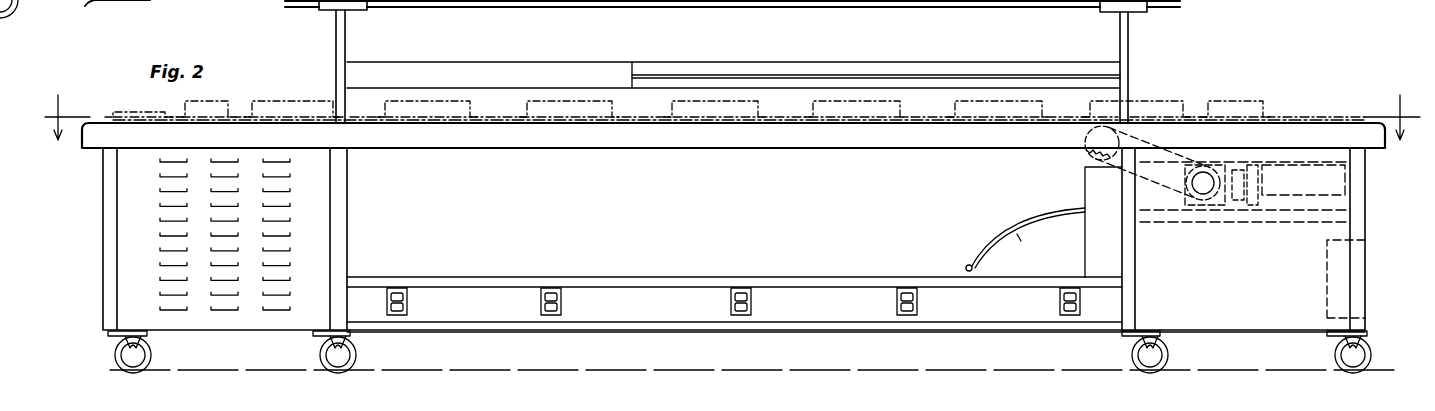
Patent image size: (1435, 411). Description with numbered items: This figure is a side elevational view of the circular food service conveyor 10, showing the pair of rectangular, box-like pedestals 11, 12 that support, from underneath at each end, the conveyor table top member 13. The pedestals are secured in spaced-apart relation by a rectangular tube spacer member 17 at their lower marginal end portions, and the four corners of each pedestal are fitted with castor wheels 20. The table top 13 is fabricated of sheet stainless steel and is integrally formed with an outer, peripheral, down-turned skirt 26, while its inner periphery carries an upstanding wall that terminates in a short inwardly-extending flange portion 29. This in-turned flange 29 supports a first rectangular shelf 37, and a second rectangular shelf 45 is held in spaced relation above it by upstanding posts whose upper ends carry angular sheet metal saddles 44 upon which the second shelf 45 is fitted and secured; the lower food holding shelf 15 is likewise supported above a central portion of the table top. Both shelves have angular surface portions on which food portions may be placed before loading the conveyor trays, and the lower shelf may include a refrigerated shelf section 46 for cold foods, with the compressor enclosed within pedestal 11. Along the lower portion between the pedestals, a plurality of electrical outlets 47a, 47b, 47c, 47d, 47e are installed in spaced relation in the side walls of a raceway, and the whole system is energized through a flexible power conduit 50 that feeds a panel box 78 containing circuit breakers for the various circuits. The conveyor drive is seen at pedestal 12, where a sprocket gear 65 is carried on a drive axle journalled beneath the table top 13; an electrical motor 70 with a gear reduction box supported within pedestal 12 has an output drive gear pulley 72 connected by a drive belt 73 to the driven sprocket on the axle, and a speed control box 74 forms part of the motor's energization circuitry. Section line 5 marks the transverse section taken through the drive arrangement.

The section line 5- 5 is at (732, 106).
The circular food service conveyor 10 is at (733, 94).
The box-like pedestal 11 is at (100, 192).
The box-like pedestal 12 is at (1377, 212).
The conveyor table top member 13 is at (1344, 120).
The lower food holding shelf 15 is at (1034, 59).
The rectangular tube spacer member 17 is at (722, 331).
The castor wheels 20 is at (358, 352).
The down-turned skirt 26 is at (787, 147).
The inwardly-extending flange portion 29 is at (802, 100).
The first rectangular shelf 37 is at (913, 58).
The angular sheet metal saddles 44 is at (355, 6).
The second rectangular shelf 45 is at (789, 12).
The refrigerated shelf section 46 is at (523, 68).
The electrical outlet 47a is at (407, 300).
The electrical outlet 47b is at (561, 300).
The electrical outlet 47c is at (751, 300).
The electrical outlet 47d is at (917, 300).
The electrical outlet 47e is at (1060, 300).
The flexible power conduit 50 is at (1056, 215).
The sprocket gear 65 is at (1090, 157).
The electrical motor 70 is at (1305, 196).
The output drive gear pulley 72 is at (1204, 200).
The drive belt 73 is at (1170, 194).
The speed control box 74 is at (1327, 287).
The panel box 78 is at (1085, 248).